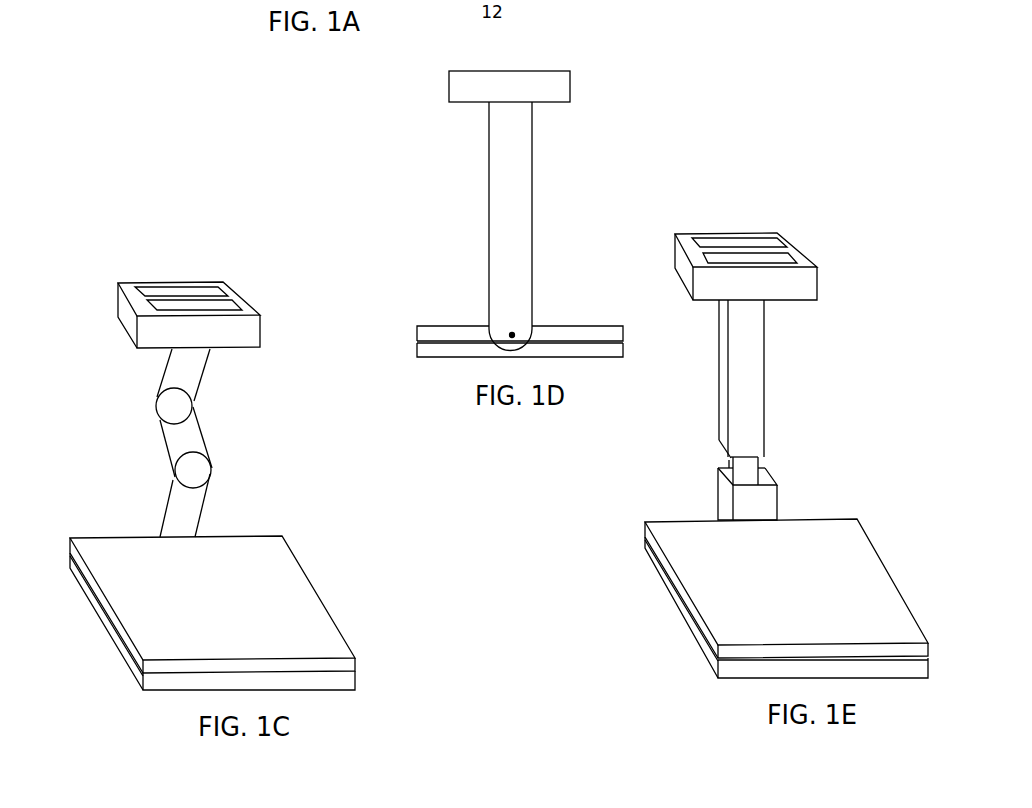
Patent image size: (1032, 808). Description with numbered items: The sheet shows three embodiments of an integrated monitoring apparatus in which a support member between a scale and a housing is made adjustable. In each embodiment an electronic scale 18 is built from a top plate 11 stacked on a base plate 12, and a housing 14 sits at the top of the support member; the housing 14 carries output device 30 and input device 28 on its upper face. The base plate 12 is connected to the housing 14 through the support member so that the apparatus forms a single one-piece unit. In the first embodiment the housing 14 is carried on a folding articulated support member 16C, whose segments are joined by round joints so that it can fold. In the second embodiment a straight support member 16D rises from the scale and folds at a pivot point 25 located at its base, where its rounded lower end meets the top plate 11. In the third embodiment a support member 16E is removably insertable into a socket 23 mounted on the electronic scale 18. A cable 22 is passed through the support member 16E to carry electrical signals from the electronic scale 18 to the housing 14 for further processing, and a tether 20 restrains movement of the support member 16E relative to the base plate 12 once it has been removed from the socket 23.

In FIG. 1C, the top plate 11 is at (357, 662).
In FIG. 1D, the top plate 11 is at (450, 325).
In FIG. 1E, the top plate 11 is at (643, 528).
In FIG. 1C, the base plate 12 is at (357, 678).
In FIG. 1D, the base plate 12 is at (417, 348).
In FIG. 1E, the base plate 12 is at (717, 671).
In FIG. 1C, the housing 14 is at (131, 283).
In FIG. 1D, the housing 14 is at (540, 70).
In FIG. 1E, the housing 14 is at (698, 235).
In FIG. 1C, the folding articulated support member 16C is at (203, 437).
In FIG. 1D, the support member 16D is at (532, 187).
In FIG. 1E, the support member 16E is at (767, 395).
In FIG. 1C, the electronic scale 18 is at (326, 538).
In FIG. 1D, the electronic scale 18 is at (582, 305).
In FIG. 1E, the electronic scale 18 is at (896, 548).
In FIG. 1E, the tether 20 is at (730, 466).
In FIG. 1E, the cable 22 is at (760, 463).
In FIG. 1E, the socket 23 is at (779, 497).
In FIG. 1D, the pivot point 25 is at (514, 337).
In FIG. 1C, the input device 28 is at (235, 307).
In FIG. 1E, the input device 28 is at (793, 253).
In FIG. 1C, the output device 30 is at (193, 288).
In FIG. 1E, the output device 30 is at (763, 237).